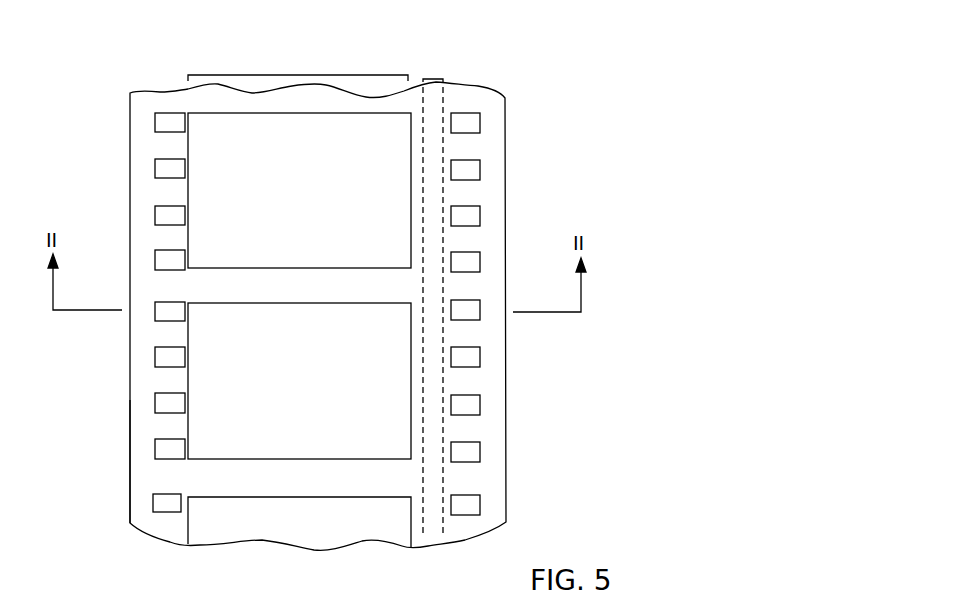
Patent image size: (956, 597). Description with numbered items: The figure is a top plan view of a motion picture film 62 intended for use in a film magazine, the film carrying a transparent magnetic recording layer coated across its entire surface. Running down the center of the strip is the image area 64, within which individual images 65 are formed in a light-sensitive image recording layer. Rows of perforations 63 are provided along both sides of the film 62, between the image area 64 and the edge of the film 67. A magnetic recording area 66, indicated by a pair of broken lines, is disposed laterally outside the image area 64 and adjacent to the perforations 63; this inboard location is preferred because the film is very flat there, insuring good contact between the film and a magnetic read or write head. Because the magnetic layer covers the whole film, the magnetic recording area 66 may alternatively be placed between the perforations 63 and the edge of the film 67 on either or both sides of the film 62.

The motion picture film 62 is at (538, 125).
The perforations 63 is at (480, 405).
The image area 64 is at (300, 75).
The images 65 is at (310, 195).
The magnetic recording area 66 is at (433, 79).
The edge of the film 67 is at (129, 451).